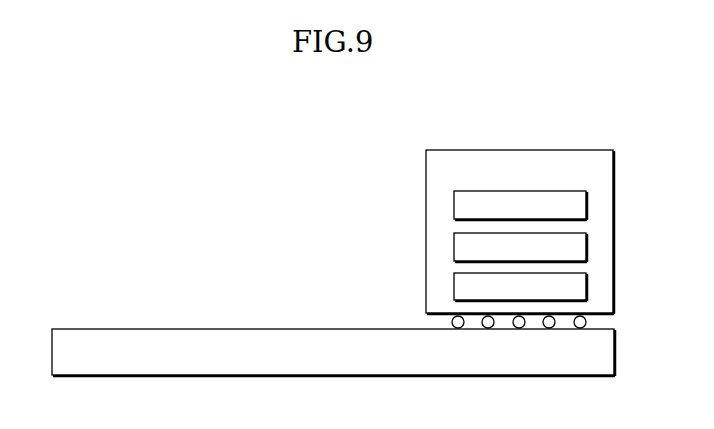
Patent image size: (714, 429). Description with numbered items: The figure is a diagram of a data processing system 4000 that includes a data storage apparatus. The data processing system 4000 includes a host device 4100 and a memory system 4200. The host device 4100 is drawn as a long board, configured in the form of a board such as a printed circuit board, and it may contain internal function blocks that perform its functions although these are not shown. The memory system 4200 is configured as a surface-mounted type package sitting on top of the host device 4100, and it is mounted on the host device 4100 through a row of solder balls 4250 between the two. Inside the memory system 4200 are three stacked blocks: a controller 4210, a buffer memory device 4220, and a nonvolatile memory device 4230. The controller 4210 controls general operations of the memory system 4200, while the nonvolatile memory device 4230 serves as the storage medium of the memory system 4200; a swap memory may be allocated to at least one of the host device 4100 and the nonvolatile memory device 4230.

The data processing system 4000 is at (126, 126).
The host device 4100 is at (333, 352).
The memory system 4200 is at (520, 232).
The controller 4210 is at (520, 205).
The buffer memory device 4220 is at (520, 247).
The nonvolatile memory device 4230 is at (520, 287).
The solder balls 4250 is at (598, 321).